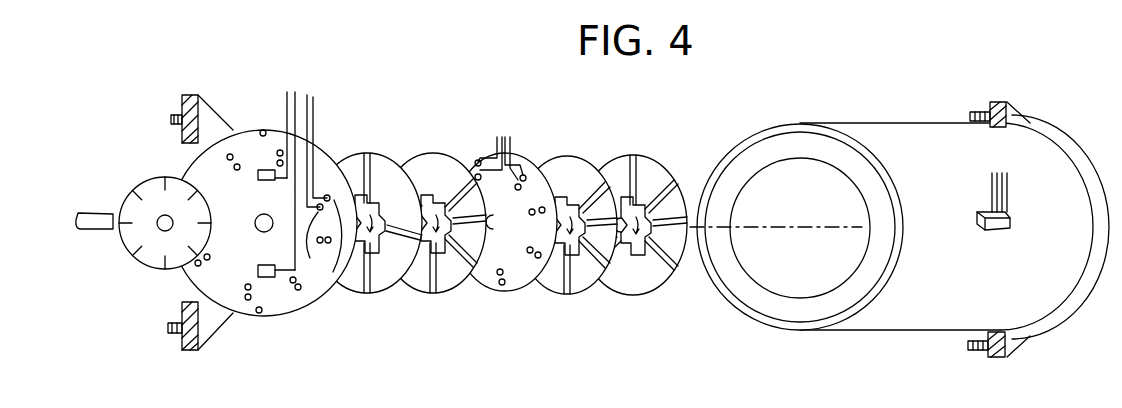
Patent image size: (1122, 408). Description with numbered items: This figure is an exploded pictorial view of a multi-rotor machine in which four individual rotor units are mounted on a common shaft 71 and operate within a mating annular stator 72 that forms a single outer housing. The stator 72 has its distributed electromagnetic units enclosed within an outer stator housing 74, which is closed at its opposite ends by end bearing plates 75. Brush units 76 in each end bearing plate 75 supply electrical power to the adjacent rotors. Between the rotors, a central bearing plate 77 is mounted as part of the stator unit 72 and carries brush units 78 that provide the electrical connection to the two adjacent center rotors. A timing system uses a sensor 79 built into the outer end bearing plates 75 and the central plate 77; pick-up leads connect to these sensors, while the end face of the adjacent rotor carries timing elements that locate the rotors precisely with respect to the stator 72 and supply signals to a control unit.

The common shaft 71 is at (720, 230).
The stator 72 is at (939, 333).
The outer stator housing 74 is at (872, 331).
The end bearing plate 75 is at (239, 308).
The brush unit 76 is at (320, 239).
The central bearing plate 77 is at (490, 292).
The brush unit 78 is at (262, 170).
The sensor 79 is at (300, 97).